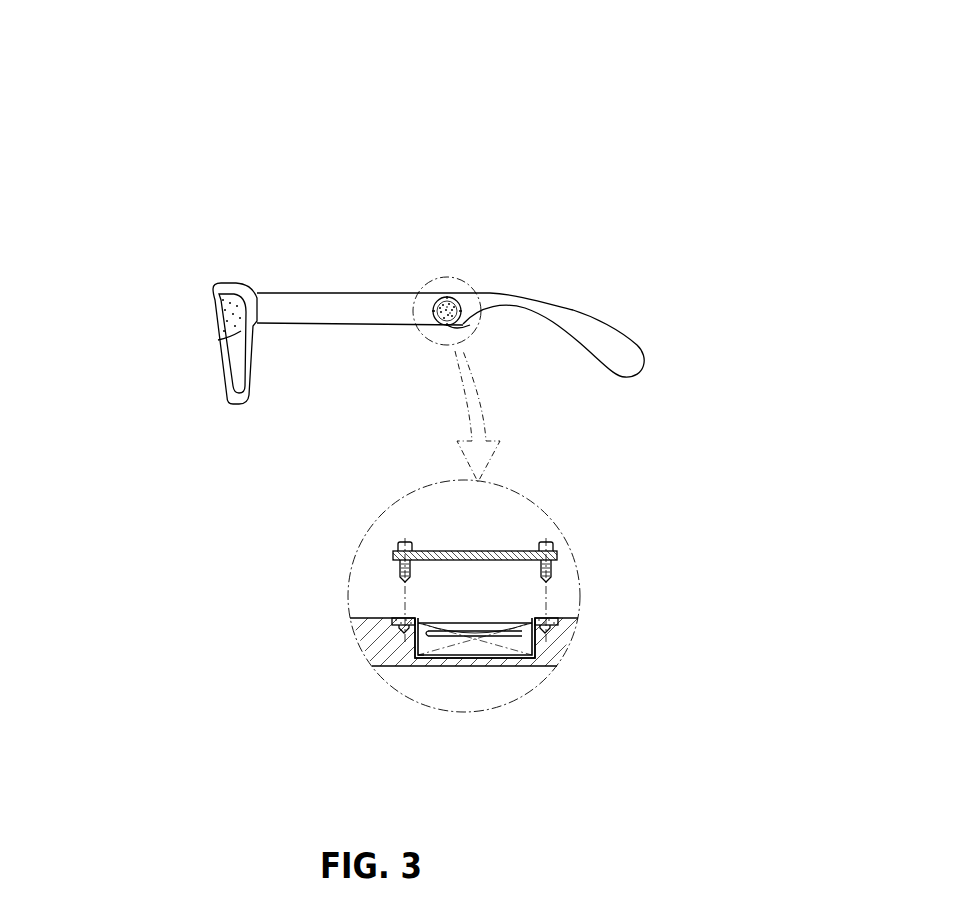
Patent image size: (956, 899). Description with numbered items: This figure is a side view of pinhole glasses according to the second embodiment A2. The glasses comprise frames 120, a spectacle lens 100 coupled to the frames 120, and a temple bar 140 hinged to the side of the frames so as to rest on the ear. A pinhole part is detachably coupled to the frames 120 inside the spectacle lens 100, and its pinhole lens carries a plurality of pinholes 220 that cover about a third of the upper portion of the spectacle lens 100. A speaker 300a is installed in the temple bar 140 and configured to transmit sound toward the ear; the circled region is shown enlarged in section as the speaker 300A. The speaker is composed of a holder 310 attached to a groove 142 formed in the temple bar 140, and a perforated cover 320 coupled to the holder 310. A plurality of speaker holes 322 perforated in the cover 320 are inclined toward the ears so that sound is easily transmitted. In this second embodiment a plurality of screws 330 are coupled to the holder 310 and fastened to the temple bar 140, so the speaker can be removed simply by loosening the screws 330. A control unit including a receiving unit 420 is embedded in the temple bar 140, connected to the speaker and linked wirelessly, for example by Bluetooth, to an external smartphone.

The second embodiment A2 is at (468, 157).
The spectacle lens 100 is at (225, 371).
The frame 120 is at (237, 402).
The pinhole 220 is at (219, 346).
The temple bar 140 is at (374, 297).
The groove 142 is at (422, 653).
The speaker 300a is at (478, 288).
The speaker 300A is at (514, 524).
The holder 310 is at (545, 617).
The cover 320 is at (446, 298).
The speaker hole 322 is at (460, 315).
The screw 330 is at (403, 574).
The receiving unit 420 is at (473, 643).